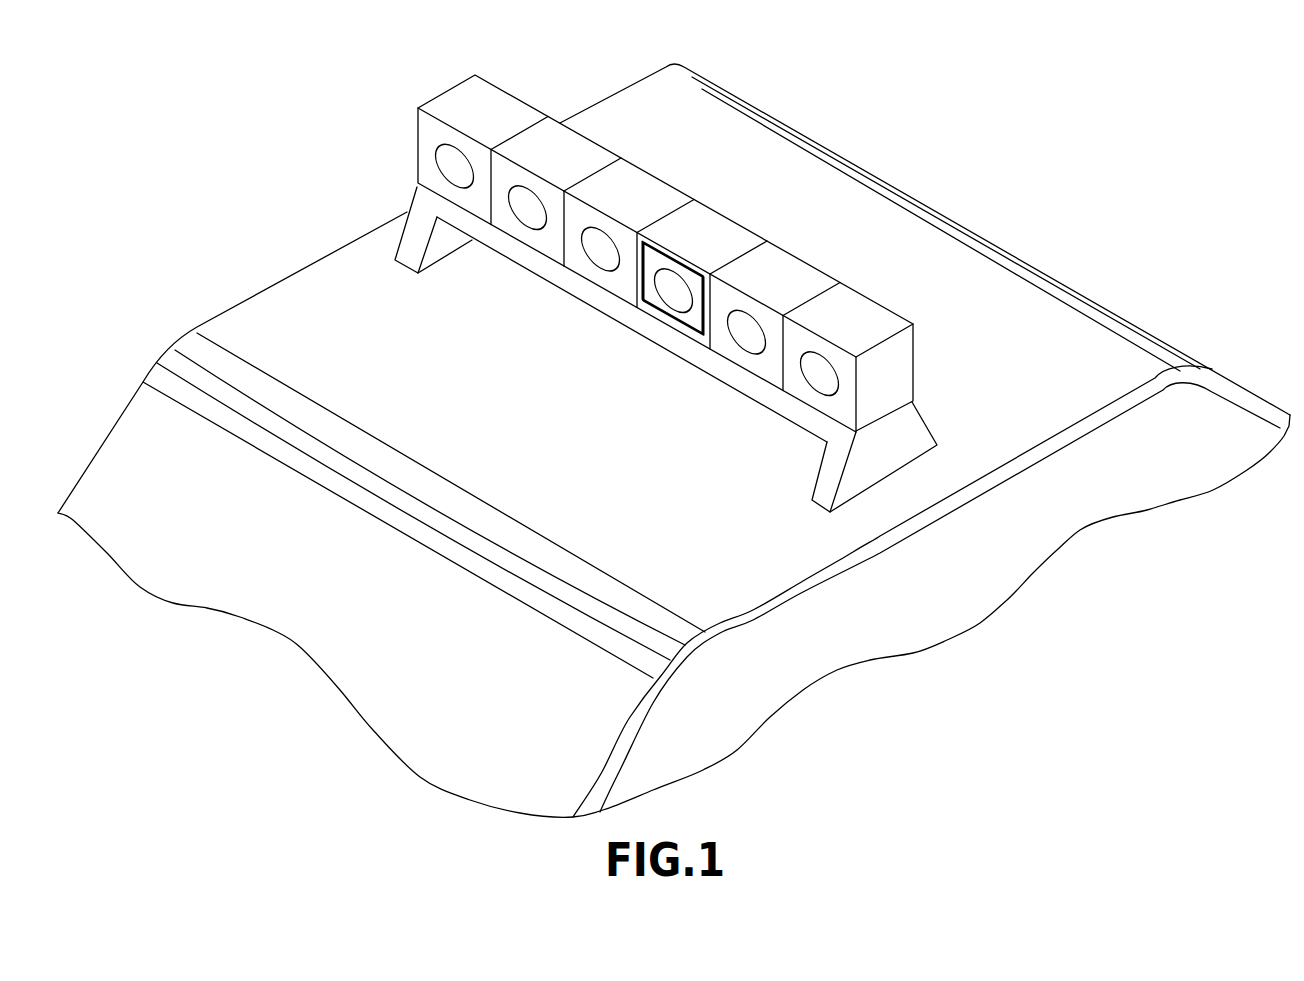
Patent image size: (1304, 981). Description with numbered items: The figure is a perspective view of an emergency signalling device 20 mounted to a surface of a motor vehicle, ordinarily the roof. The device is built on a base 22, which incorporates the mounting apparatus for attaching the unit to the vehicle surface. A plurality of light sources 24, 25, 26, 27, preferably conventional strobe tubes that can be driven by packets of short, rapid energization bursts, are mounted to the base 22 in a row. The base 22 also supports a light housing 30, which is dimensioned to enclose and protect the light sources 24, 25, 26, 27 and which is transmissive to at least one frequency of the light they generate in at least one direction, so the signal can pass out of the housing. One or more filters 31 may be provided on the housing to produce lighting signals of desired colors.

The emergency signalling device 20 is at (902, 162).
The base 22 is at (915, 433).
The light source 24 is at (527, 207).
The light source 25 is at (598, 248).
The light source 26 is at (672, 290).
The light source 27 is at (745, 333).
The light housing 30 is at (458, 100).
The filter 31 is at (653, 262).